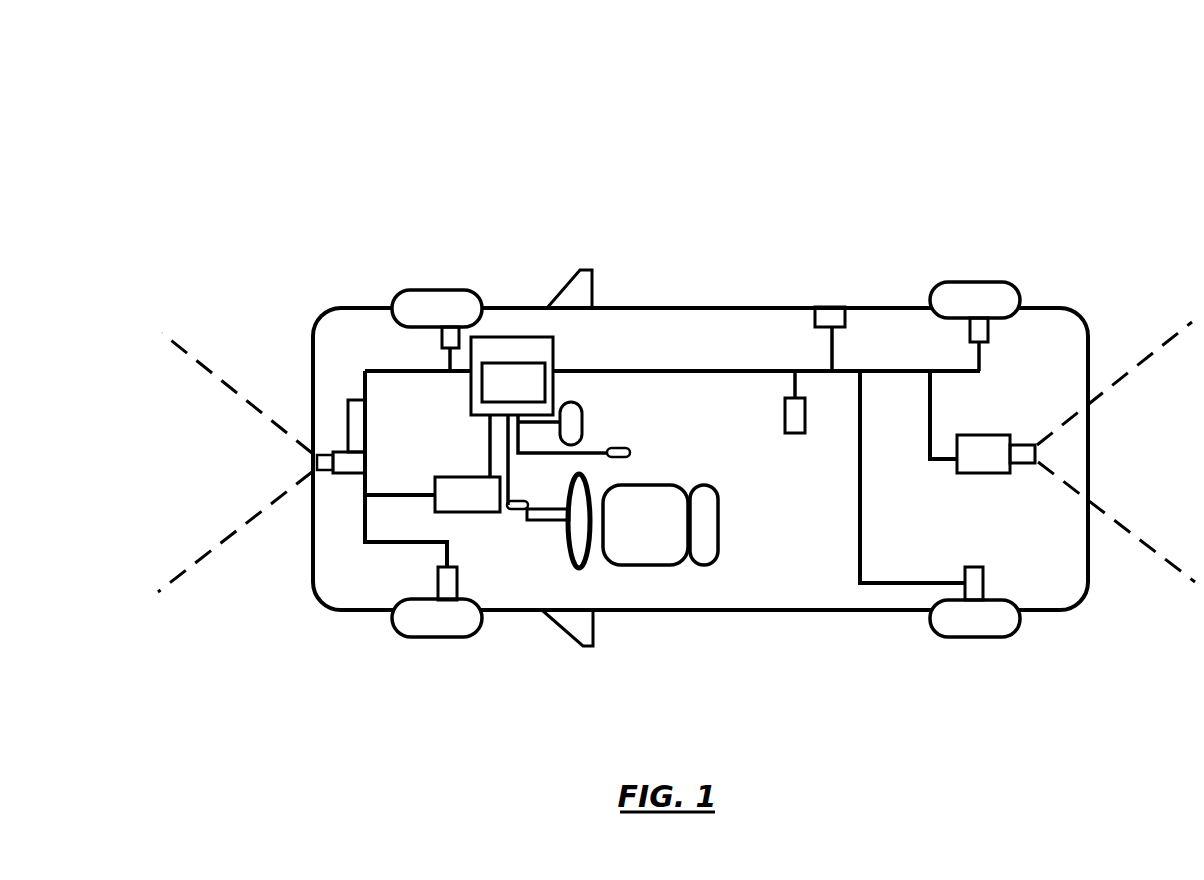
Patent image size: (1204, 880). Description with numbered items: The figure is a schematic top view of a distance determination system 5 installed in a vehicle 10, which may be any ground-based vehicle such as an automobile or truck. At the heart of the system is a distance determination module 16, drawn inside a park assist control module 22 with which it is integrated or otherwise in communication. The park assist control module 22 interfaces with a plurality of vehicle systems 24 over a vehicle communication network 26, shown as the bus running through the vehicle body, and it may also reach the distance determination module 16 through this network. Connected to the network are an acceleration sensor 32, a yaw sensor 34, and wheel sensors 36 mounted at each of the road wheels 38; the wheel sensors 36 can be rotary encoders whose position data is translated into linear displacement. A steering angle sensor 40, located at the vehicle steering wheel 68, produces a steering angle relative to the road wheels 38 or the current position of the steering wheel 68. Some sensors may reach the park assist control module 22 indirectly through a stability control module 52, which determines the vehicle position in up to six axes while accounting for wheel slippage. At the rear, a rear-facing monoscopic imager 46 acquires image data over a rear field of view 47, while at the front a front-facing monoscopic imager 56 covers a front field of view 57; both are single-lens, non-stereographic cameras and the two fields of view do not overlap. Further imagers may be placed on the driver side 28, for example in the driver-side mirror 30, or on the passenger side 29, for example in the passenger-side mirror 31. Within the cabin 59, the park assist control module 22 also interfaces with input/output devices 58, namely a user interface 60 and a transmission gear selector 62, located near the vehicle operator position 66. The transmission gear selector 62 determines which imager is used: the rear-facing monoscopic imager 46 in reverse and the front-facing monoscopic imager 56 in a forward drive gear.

The distance determination system 5 is at (515, 119).
The vehicle 10 is at (746, 221).
The distance determination module 16 is at (499, 395).
The park assist control module 22 is at (530, 373).
The vehicle systems 24 is at (887, 325).
The vehicle communication network 26 is at (676, 372).
The driver side 28 is at (690, 612).
The passenger side 29 is at (738, 307).
The driver-side mirror 30 is at (565, 632).
The passenger-side mirror 31 is at (592, 286).
The acceleration sensor 32 is at (798, 433).
The yaw sensor 34 is at (833, 307).
The wheel sensors 36 is at (460, 328).
The road wheels 38 is at (452, 289).
The steering angle sensor 40 is at (512, 502).
The rear-facing monoscopic imager 46 is at (1000, 474).
The rear field of view 47 is at (1188, 583).
The stability control module 52 is at (453, 506).
The front-facing monoscopic imager 56 is at (330, 452).
The front field of view 57 is at (188, 568).
The input/output devices 58 is at (636, 424).
The cabin 59 is at (680, 478).
The user interface 60 is at (582, 404).
The transmission gear selector 62 is at (630, 449).
The vehicle operator position 66 is at (631, 536).
The steering wheel 68 is at (550, 545).